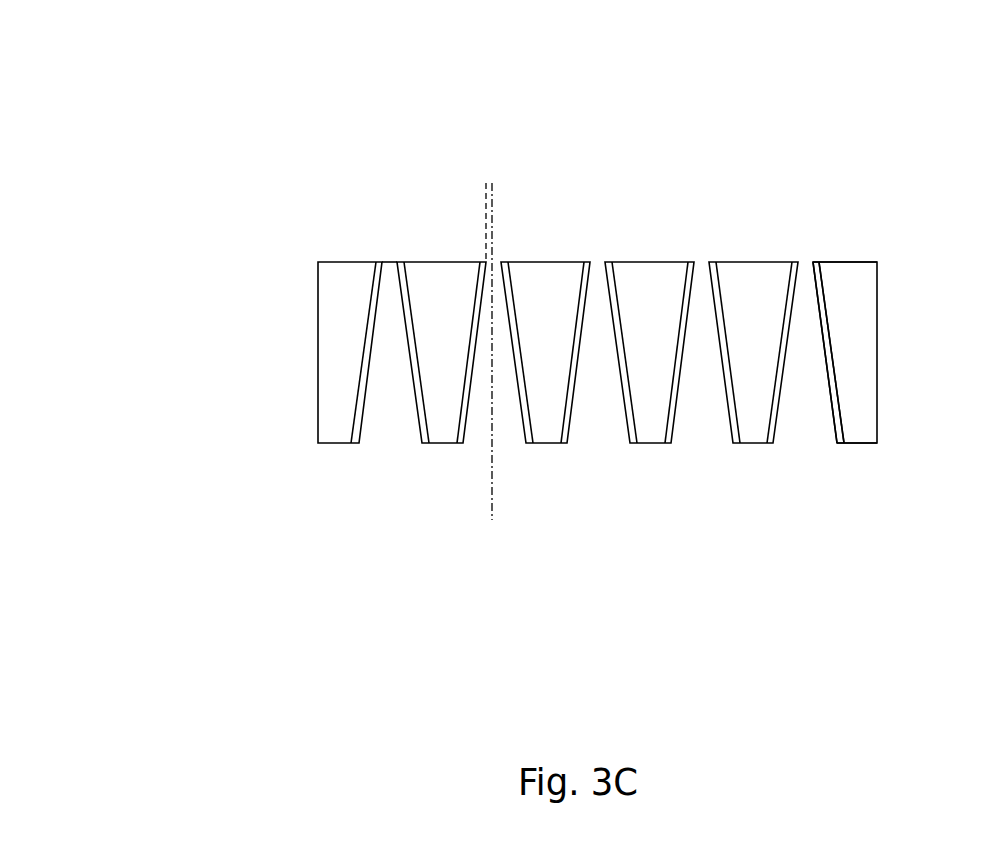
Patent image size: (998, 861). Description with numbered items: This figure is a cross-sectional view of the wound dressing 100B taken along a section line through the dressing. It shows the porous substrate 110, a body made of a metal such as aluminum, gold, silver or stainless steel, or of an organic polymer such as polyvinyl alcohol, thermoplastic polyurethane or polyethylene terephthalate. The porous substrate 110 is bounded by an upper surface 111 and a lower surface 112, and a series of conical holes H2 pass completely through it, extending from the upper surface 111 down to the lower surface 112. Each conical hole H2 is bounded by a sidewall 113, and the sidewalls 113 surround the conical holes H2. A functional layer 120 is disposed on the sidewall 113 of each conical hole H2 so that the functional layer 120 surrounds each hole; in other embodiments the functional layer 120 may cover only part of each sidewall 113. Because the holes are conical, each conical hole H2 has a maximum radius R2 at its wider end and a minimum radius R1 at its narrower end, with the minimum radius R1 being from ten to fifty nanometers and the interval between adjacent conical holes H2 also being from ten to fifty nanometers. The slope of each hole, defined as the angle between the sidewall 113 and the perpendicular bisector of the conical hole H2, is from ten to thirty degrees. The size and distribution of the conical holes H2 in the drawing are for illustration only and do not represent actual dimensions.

The wound dressing 100B is at (215, 52).
The porous substrate 110 is at (866, 346).
The upper surface 111 is at (858, 263).
The lower surface 112 is at (864, 446).
The sidewall 113 is at (826, 272).
The functional layer 120 is at (836, 417).
The conical holes H2 is at (390, 273).
The minimum radius R1 is at (526, 195).
The maximum radius R2 is at (492, 443).